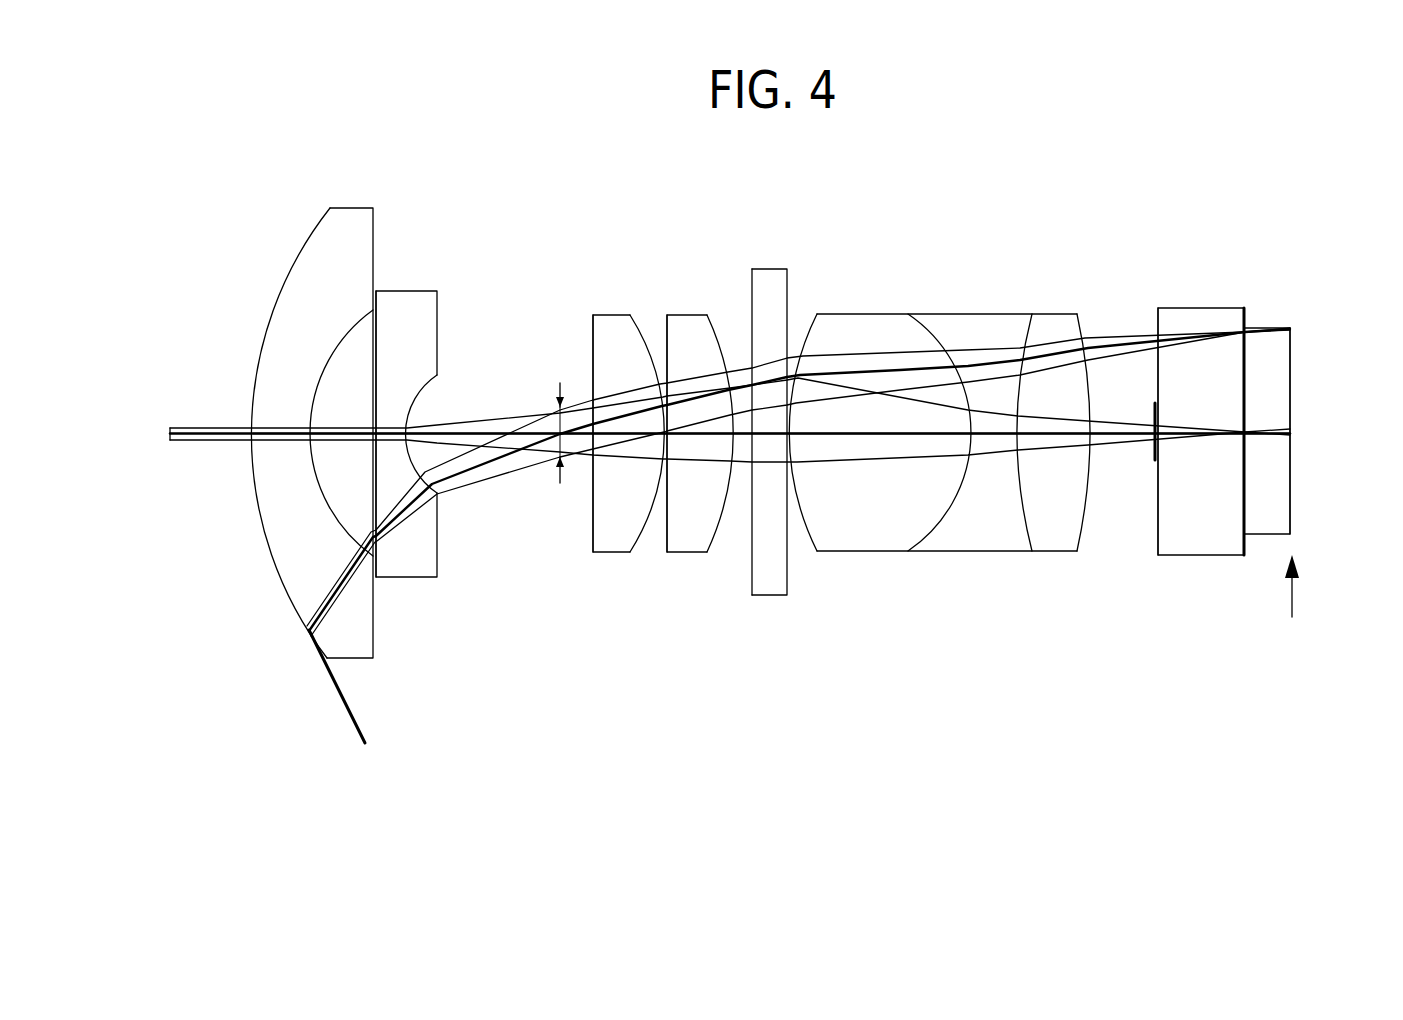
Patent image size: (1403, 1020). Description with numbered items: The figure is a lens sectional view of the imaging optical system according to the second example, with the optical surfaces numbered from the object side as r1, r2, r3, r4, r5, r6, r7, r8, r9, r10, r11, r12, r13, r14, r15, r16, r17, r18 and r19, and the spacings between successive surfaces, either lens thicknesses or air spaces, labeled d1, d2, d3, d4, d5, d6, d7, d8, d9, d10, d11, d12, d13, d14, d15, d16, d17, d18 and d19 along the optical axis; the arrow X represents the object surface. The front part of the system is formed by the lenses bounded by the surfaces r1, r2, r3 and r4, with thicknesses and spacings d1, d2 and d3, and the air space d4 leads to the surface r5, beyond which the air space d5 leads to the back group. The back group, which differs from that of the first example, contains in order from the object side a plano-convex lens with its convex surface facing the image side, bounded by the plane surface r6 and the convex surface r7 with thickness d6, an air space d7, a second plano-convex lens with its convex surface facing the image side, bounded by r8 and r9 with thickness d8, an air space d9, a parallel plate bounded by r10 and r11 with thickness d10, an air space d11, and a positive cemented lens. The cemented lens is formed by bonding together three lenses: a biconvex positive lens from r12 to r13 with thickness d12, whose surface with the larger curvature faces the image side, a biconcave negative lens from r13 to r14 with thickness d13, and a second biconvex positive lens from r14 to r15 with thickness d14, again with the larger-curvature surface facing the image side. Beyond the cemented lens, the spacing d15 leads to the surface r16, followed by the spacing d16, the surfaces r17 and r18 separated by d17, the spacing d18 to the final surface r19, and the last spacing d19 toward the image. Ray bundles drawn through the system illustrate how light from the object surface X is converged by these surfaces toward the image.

The optical surface r1 is at (262, 523).
The optical surface r2 is at (316, 462).
The optical surface r3 is at (376, 473).
The optical surface r4 is at (432, 470).
The optical surface r5 is at (558, 480).
The optical surface r6 is at (592, 538).
The optical surface r7 is at (636, 550).
The optical surface r8 is at (665, 555).
The optical surface r9 is at (707, 555).
The optical surface r10 is at (752, 598).
The optical surface r11 is at (790, 598).
The optical surface r12 is at (820, 553).
The optical surface r13 is at (915, 553).
The optical surface r14 is at (1030, 553).
The optical surface r15 is at (1078, 553).
The optical surface r16 is at (1153, 417).
The optical surface r17 is at (1162, 558).
The optical surface r18 is at (1245, 522).
The optical surface r19 is at (1243, 503).
The inter-surface spacing d1 is at (279, 432).
The inter-surface spacing d2 is at (340, 432).
The inter-surface spacing d3 is at (392, 432).
The inter-surface spacing d4 is at (477, 432).
The inter-surface spacing d5 is at (582, 432).
The inter-surface spacing d6 is at (626, 432).
The inter-surface spacing d7 is at (665, 432).
The inter-surface spacing d8 is at (700, 437).
The inter-surface spacing d9 is at (743, 432).
The inter-surface spacing d10 is at (779, 430).
The inter-surface spacing d11 is at (798, 598).
The inter-surface spacing d12 is at (862, 437).
The inter-surface spacing d13 is at (995, 436).
The inter-surface spacing d14 is at (1053, 436).
The inter-surface spacing d15 is at (1120, 436).
The inter-surface spacing d16 is at (1158, 458).
The inter-surface spacing d17 is at (1197, 430).
The inter-surface spacing d18 is at (1246, 432).
The inter-surface spacing d19 is at (1262, 435).
The object surface X is at (1292, 605).